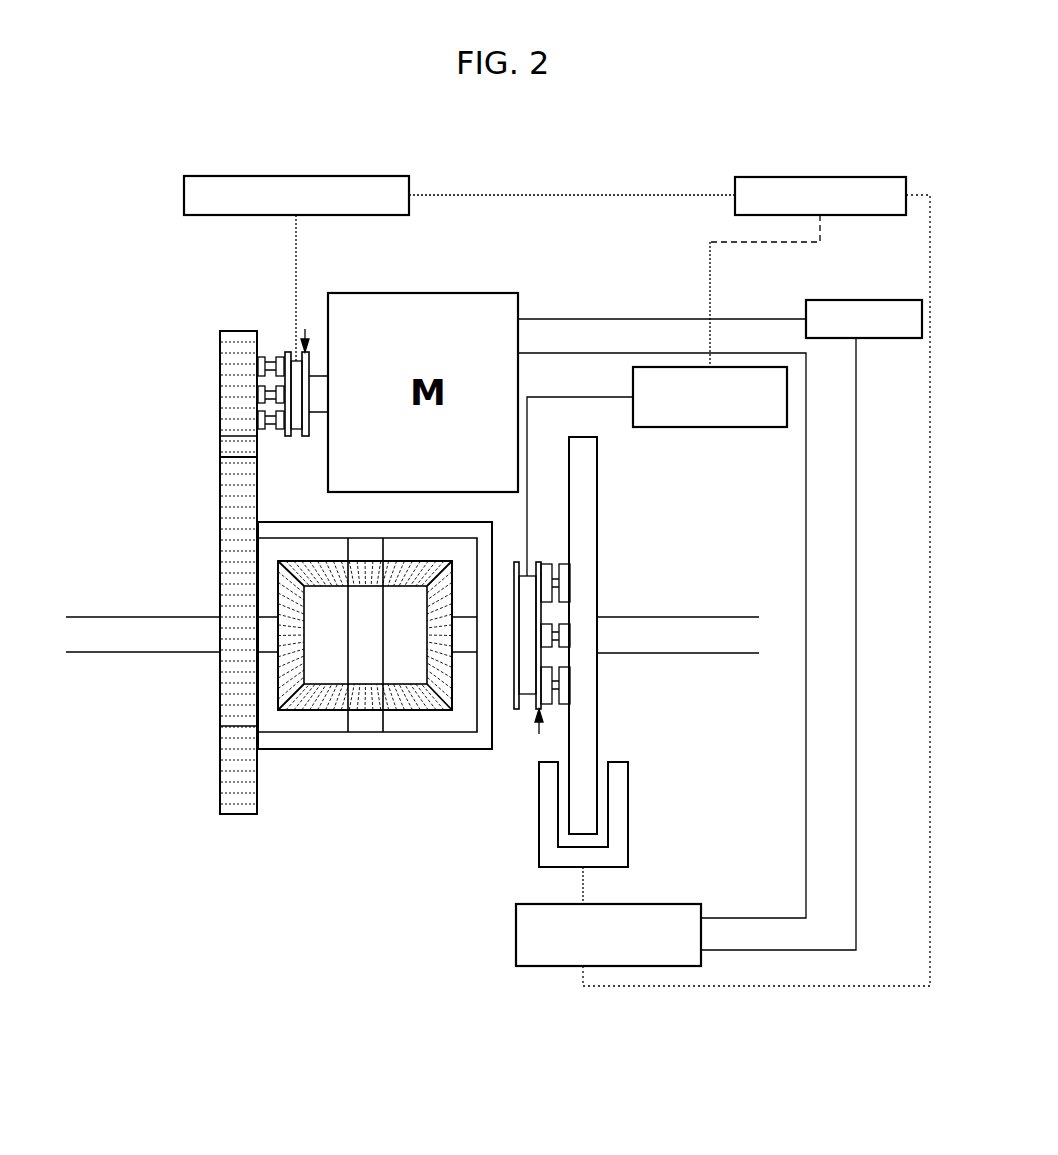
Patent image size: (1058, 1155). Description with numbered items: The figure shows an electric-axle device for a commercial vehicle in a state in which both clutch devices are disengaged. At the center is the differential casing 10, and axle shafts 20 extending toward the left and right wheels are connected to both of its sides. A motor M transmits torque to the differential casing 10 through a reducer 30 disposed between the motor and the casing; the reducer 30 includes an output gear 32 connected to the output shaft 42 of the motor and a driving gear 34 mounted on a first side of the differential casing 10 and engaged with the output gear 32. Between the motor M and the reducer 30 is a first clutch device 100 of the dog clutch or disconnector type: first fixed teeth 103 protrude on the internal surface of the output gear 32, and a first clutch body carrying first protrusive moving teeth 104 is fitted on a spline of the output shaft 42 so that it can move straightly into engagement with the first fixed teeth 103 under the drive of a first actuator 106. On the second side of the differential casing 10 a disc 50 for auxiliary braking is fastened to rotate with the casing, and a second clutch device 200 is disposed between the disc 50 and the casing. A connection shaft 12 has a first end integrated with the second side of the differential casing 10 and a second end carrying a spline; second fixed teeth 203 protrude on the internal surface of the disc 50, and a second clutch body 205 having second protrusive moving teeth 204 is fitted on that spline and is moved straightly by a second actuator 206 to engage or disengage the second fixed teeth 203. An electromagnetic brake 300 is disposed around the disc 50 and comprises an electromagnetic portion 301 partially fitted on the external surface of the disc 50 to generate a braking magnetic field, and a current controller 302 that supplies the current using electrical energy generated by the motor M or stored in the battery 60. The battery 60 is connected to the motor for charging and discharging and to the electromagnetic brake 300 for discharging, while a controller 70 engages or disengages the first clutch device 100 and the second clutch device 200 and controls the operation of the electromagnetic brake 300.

The differential casing 10 is at (310, 741).
The connection shaft 12 is at (498, 600).
The axle shafts 20 is at (126, 645).
The reducer 30 is at (177, 572).
The output gear 32 is at (227, 393).
The driving gear 34 is at (197, 625).
The output shaft 42 is at (323, 405).
The disc 50 is at (588, 478).
The battery 60 is at (885, 339).
The controller 70 is at (857, 178).
The first clutch device 100 is at (307, 330).
The first fixed teeth 103 is at (258, 348).
The first protrusive moving teeth 104 is at (287, 352).
The first actuator 106 is at (185, 192).
The second clutch device 200 is at (540, 736).
The second fixed teeth 203 is at (563, 590).
The second protrusive moving teeth 204 is at (547, 575).
The second clutch body 205 is at (530, 695).
The second actuator 206 is at (748, 428).
The electromagnetic brake 300 is at (423, 846).
The electromagnetic portion 301 is at (540, 850).
The current controller 302 is at (517, 920).